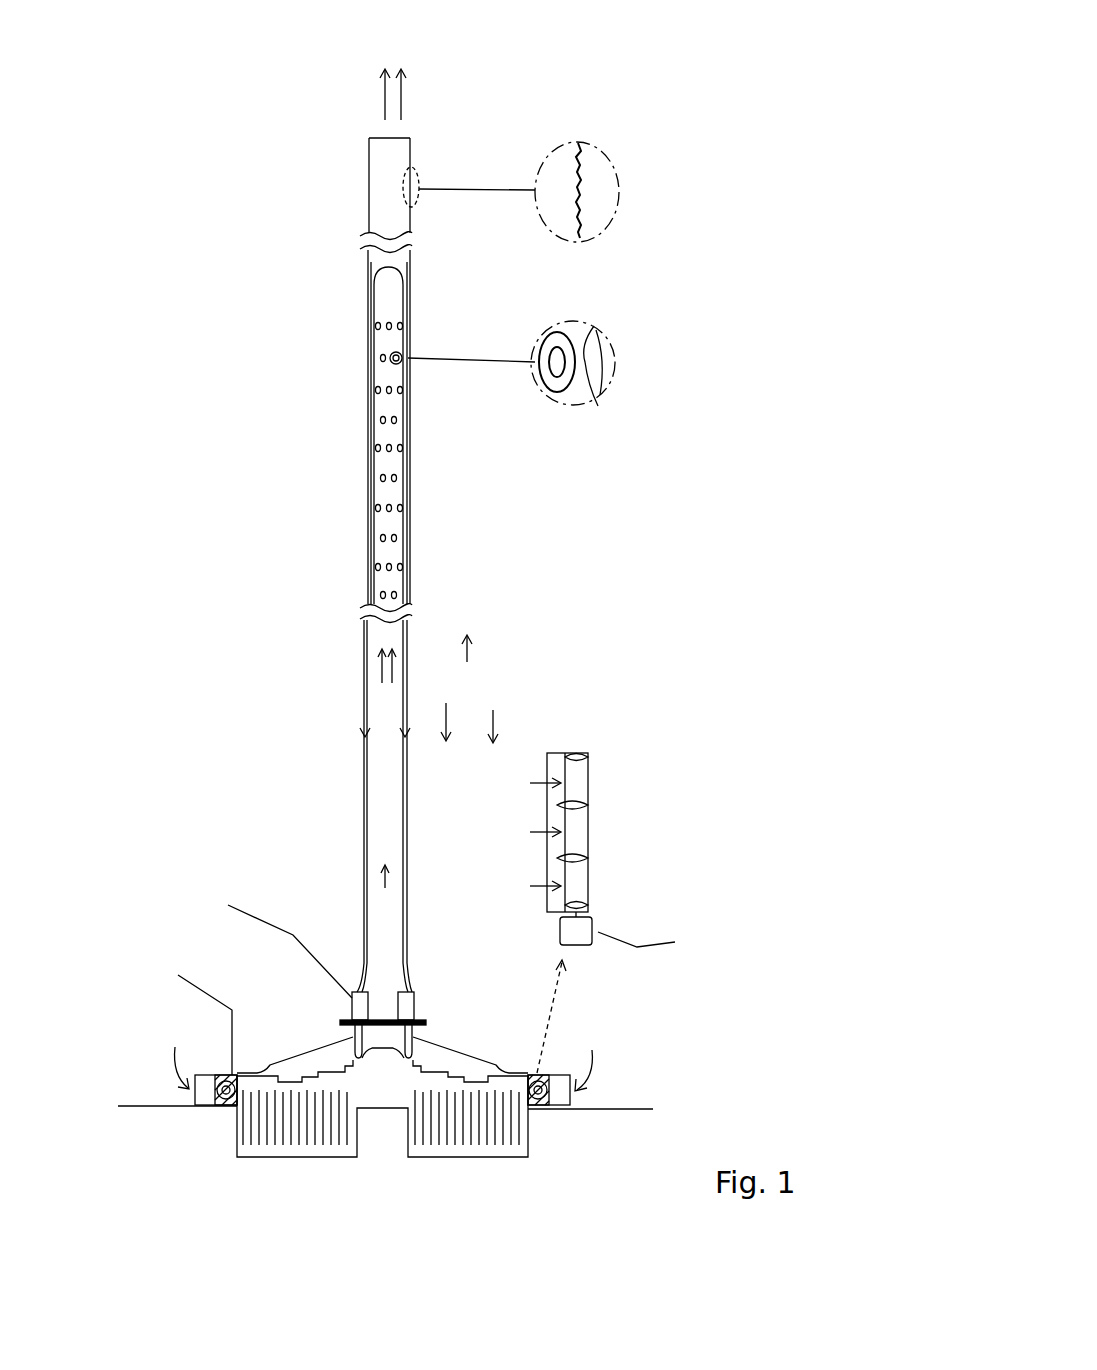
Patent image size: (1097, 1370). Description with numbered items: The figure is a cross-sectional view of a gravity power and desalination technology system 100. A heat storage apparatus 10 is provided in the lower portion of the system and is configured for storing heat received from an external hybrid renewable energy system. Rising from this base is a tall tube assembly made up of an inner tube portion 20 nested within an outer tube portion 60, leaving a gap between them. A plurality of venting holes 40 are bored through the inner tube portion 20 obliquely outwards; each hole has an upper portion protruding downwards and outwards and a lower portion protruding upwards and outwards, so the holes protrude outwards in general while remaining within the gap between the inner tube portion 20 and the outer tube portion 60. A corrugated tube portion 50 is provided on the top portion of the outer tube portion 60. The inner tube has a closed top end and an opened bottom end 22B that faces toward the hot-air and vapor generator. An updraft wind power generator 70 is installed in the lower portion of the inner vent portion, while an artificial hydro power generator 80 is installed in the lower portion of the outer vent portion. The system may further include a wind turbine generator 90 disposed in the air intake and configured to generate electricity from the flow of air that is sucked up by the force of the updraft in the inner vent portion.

The gravity power and desalination technology system 100 is at (815, 33).
The corrugated tube portion 50 is at (540, 167).
The inner tube portion 20 is at (288, 424).
The outer tube portion 60 is at (289, 565).
The venting holes 40 is at (386, 460).
The updraft wind power generator 70 is at (296, 791).
The artificial hydro power generator 80 is at (318, 940).
The bottom end 22B is at (417, 1008).
The wind turbine generator 90 is at (499, 1111).
The heat storage apparatus 10 is at (383, 1133).